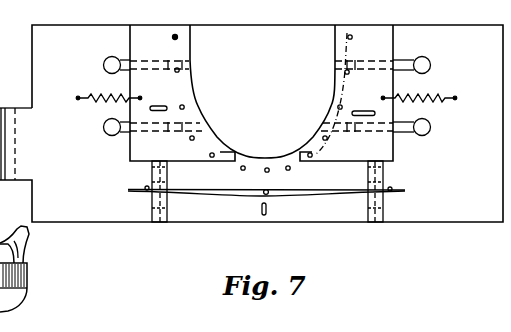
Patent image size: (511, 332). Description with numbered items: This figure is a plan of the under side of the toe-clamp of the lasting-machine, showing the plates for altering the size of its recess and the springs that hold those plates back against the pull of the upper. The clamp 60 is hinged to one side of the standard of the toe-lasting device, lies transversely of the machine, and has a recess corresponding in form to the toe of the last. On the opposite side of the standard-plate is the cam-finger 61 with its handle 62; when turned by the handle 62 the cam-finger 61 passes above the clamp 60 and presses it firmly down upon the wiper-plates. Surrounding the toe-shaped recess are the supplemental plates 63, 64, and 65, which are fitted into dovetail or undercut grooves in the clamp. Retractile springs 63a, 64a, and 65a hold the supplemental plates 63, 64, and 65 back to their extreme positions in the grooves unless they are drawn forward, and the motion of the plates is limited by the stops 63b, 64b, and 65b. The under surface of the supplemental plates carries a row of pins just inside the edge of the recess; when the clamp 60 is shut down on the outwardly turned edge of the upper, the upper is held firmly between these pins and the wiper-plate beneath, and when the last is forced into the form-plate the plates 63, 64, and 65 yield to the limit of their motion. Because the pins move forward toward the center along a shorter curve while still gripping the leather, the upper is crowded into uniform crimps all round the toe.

The clamp 60 is at (251, 123).
The cam-finger 61 is at (28, 281).
The handle 62 is at (30, 240).
The supplemental plate 63 is at (170, 93).
The retractile spring 63a is at (109, 106).
The stop 63b is at (171, 104).
The supplemental plate 64 is at (267, 191).
The retractile spring 64a is at (266, 183).
The stop 64b is at (279, 209).
The supplemental plate 65 is at (365, 93).
The retractile spring 65a is at (419, 89).
The stop 65b is at (376, 106).